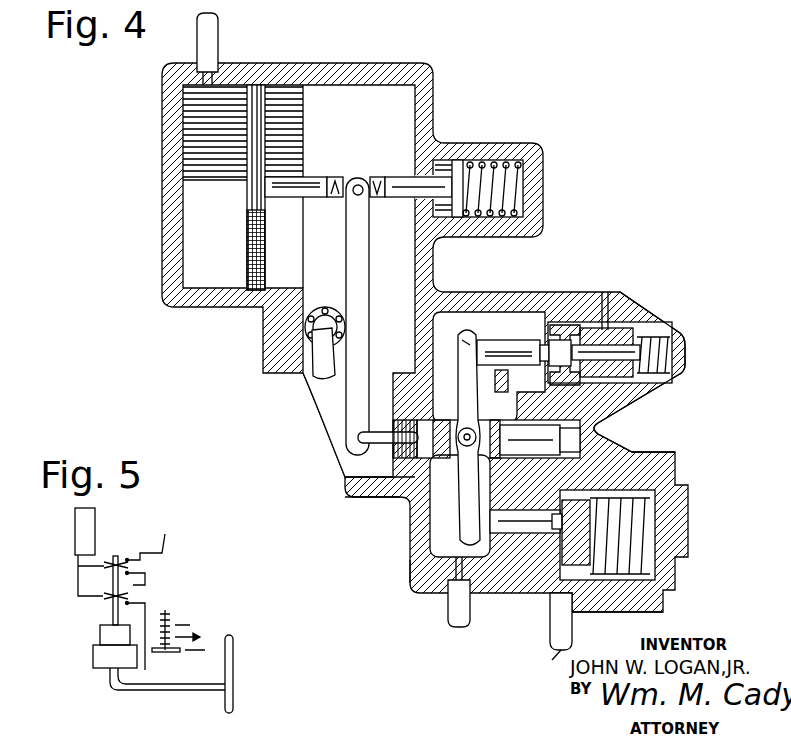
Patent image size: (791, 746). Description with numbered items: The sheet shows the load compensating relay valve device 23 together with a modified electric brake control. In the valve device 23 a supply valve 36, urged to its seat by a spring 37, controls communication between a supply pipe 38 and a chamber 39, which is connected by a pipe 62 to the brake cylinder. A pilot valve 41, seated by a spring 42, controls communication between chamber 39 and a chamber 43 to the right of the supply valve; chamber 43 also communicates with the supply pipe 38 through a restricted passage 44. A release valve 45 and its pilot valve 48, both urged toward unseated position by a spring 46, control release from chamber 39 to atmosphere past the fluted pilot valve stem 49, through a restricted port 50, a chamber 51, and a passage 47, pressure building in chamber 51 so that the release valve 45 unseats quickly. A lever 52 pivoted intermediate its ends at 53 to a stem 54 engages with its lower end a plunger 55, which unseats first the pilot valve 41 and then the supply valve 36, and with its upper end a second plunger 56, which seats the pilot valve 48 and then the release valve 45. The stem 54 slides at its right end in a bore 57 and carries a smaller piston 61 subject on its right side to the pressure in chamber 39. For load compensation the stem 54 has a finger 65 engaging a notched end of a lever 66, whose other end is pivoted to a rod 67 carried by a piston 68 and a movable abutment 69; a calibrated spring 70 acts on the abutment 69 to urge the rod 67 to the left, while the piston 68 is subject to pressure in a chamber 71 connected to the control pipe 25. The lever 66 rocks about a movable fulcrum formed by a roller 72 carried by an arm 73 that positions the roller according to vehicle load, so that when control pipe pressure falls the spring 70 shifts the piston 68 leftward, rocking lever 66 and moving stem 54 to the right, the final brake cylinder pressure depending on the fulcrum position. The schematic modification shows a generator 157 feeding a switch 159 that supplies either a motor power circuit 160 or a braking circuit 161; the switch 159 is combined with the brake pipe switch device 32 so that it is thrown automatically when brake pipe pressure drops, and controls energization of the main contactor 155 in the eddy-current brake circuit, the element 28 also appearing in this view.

In FIG. 4, the load compensating relay valve device 23 is at (413, 320).
In FIG. 4, the control pipe 25 is at (210, 42).
In FIG. 4, the piston 68 is at (256, 113).
In FIG. 4, the rod 67 is at (305, 185).
In FIG. 4, the movable abutment 69 is at (457, 170).
In FIG. 4, the calibrated spring 70 is at (495, 190).
In FIG. 4, the chamber 71 is at (193, 197).
In FIG. 4, the roller 72 is at (318, 320).
In FIG. 4, the arm 73 is at (320, 357).
In FIG. 4, the lever 66 is at (350, 392).
In FIG. 4, the finger 65 is at (385, 437).
In FIG. 4, the smaller piston 61 is at (402, 492).
In FIG. 4, the chamber 39 is at (440, 520).
In FIG. 4, the plunger 55 is at (415, 562).
In FIG. 4, the pipe 62 is at (452, 608).
In FIG. 4, the supply valve 36 is at (530, 595).
In FIG. 4, the supply pipe 38 is at (557, 633).
In FIG. 4, the lever 52 is at (462, 333).
In FIG. 4, the second plunger 56 is at (487, 345).
In FIG. 4, the pilot valve 48 is at (541, 345).
In FIG. 4, the release valve 45 is at (555, 330).
In FIG. 4, the passage 47 is at (605, 300).
In FIG. 4, the port 50 is at (620, 335).
In FIG. 4, the spring 46 is at (665, 340).
In FIG. 4, the chamber 51 is at (640, 375).
In FIG. 4, the fluted pilot valve stem 49 is at (650, 393).
In FIG. 4, the bore 57 is at (580, 430).
In FIG. 4, the pilot valve 41 is at (615, 438).
In FIG. 4, the spring 42 is at (650, 517).
In FIG. 4, the spring 37 is at (648, 538).
In FIG. 4, the chamber 43 is at (643, 562).
In FIG. 4, the restricted passage 44 is at (643, 593).
In FIG. 4, the pivot 53 is at (462, 425).
In FIG. 4, the stem 54 is at (510, 430).
In FIG. 5, the generator 157 is at (78, 521).
In FIG. 5, the switch 159 is at (104, 590).
In FIG. 5, the motor power circuit 160 is at (166, 535).
In FIG. 5, the braking circuit 161 is at (147, 600).
In FIG. 5, the fluid pressure operated switch device 32 is at (93, 652).
In FIG. 5, the main contactor 155 is at (172, 622).
In FIG. 5, the lever 28 is at (233, 672).